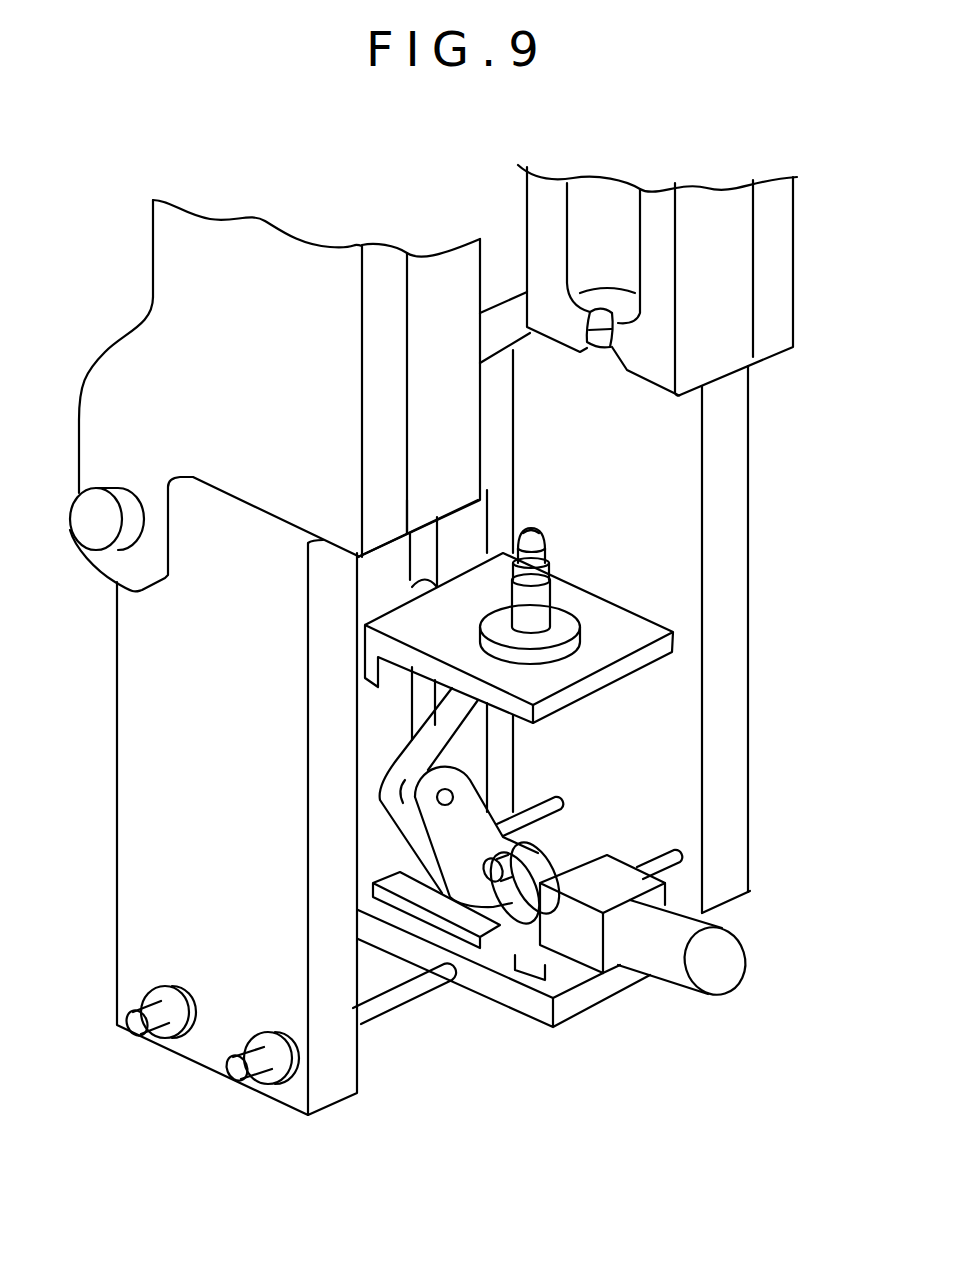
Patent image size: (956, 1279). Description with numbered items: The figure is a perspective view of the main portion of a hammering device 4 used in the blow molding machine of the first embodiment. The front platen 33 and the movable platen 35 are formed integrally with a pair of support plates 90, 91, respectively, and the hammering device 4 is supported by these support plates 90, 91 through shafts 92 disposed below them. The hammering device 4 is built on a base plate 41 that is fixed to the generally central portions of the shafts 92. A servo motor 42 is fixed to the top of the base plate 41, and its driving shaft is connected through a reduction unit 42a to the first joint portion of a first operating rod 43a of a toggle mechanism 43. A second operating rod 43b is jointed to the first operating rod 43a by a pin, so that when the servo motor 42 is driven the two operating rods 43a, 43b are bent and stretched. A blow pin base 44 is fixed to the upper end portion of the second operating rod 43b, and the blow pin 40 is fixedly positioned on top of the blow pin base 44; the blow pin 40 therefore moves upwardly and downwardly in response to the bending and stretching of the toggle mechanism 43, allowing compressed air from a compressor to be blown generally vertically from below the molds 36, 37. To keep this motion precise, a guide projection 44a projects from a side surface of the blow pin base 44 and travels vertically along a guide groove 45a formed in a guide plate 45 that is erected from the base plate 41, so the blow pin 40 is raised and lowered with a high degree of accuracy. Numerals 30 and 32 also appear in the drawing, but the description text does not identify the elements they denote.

The hammering device 4 is at (548, 550).
The connecting rod 30 is at (523, 434).
The roller 32 is at (83, 523).
The front platen 33 is at (176, 322).
The movable platen 35 is at (771, 215).
The mold 36 is at (460, 368).
The mold 37 is at (632, 345).
The blow pin 40 is at (537, 598).
The base plate 41 is at (522, 1002).
The servo motor 42 is at (633, 935).
The reduction unit 42a is at (515, 915).
The toggle mechanism 43 is at (373, 757).
The first operating rod 43a is at (437, 848).
The second operating rod 43b is at (430, 723).
The blow pin base 44 is at (373, 642).
The guide projection 44a is at (405, 585).
The guide plate 45 is at (387, 578).
The guide groove 45a is at (397, 537).
The support plate 90 is at (165, 650).
The support plate 91 is at (710, 490).
The shafts 92 is at (653, 863).